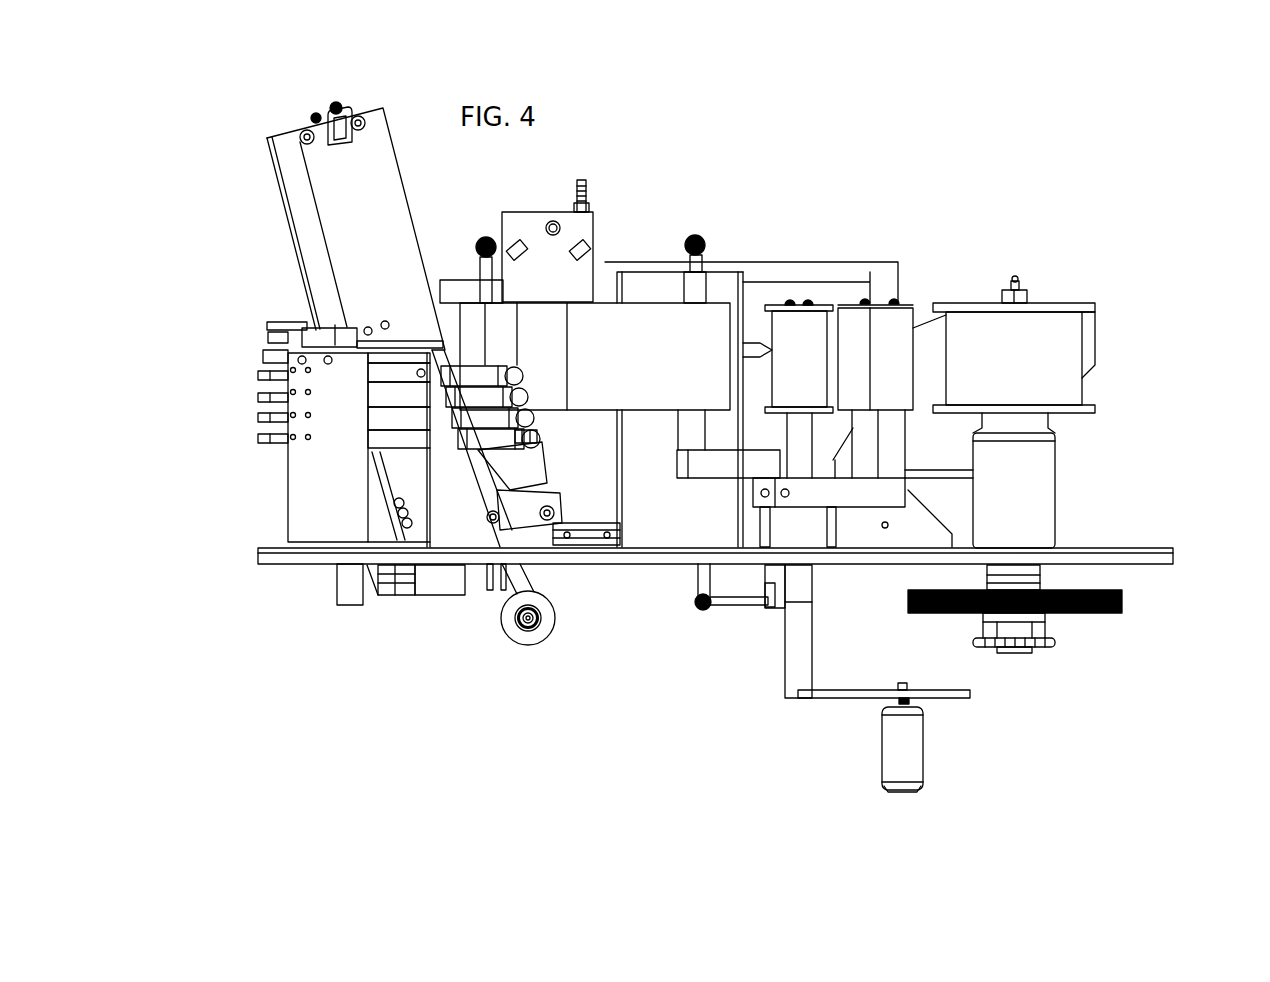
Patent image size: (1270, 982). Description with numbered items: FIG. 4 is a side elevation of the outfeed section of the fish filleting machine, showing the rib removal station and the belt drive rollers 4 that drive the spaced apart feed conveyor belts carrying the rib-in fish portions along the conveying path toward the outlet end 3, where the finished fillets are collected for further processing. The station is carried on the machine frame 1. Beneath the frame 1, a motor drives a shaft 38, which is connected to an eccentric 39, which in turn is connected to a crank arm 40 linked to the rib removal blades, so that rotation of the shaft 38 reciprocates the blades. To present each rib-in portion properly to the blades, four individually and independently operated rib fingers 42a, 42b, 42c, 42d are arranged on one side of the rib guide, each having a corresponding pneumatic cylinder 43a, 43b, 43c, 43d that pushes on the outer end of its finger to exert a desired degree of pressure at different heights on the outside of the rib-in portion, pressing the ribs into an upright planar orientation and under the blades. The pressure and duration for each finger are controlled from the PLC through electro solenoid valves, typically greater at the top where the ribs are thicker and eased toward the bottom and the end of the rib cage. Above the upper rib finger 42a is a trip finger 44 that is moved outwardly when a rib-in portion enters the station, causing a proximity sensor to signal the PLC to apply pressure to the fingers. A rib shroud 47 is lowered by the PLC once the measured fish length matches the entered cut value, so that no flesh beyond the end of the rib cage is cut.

The frame 1 is at (1178, 596).
The outlet end 3 is at (1148, 522).
The drive rollers 4 is at (1090, 338).
The shaft 38 is at (522, 660).
The eccentric 39 is at (555, 671).
The crank arm 40 is at (560, 586).
The rib finger 42a is at (232, 357).
The rib finger 42b is at (230, 375).
The rib finger 42c is at (230, 400).
The rib finger 42d is at (238, 455).
The pneumatic cylinder 43a is at (512, 372).
The pneumatic cylinder 43b is at (520, 393).
The pneumatic cylinder 43c is at (527, 410).
The pneumatic cylinder 43d is at (530, 428).
The trip finger 44 is at (232, 355).
The rib shroud 47 is at (250, 196).